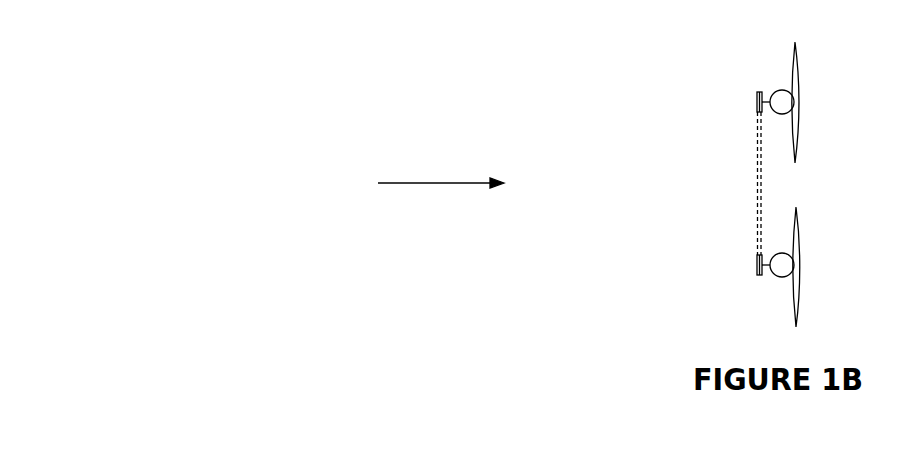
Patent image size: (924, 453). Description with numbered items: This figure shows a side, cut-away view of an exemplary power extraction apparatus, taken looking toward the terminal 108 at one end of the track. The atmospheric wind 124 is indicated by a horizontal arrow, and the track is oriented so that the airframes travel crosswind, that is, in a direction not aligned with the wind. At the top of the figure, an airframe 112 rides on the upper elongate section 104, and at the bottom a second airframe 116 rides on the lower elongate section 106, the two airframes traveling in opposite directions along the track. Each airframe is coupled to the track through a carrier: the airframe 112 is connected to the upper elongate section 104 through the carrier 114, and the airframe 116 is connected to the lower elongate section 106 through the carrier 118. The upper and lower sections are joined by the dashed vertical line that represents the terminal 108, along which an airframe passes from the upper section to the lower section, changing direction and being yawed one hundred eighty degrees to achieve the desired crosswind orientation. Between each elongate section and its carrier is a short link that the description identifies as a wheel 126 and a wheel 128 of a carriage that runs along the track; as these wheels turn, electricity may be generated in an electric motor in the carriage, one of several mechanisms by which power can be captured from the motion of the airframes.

The upper elongate section 104 is at (757, 100).
The lower elongate section 106 is at (757, 270).
The terminal 108 is at (756, 160).
The airframe 112 is at (798, 60).
The carrier 114 is at (784, 102).
The airframe 116 is at (800, 310).
The carrier 118 is at (786, 265).
The atmospheric wind 124 is at (422, 183).
The wheel 126 is at (762, 92).
The wheel 128 is at (762, 275).